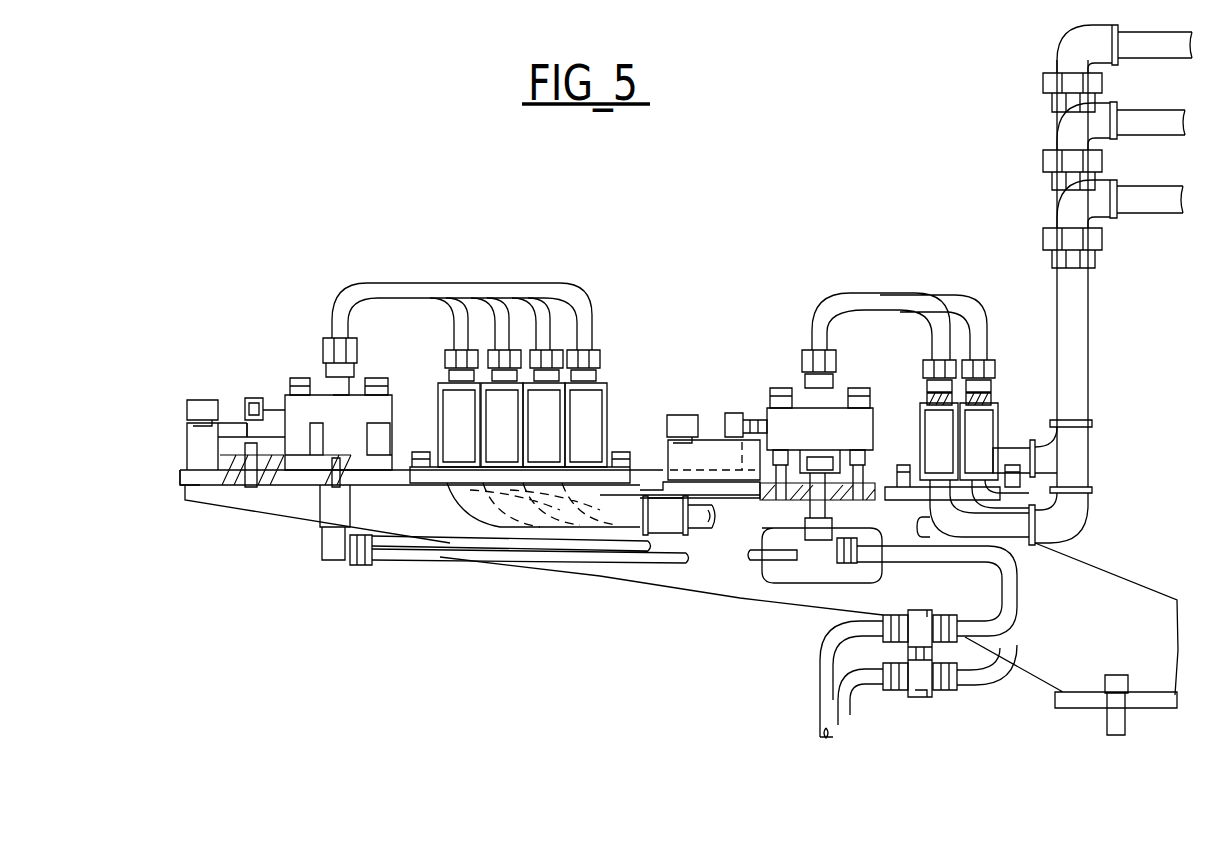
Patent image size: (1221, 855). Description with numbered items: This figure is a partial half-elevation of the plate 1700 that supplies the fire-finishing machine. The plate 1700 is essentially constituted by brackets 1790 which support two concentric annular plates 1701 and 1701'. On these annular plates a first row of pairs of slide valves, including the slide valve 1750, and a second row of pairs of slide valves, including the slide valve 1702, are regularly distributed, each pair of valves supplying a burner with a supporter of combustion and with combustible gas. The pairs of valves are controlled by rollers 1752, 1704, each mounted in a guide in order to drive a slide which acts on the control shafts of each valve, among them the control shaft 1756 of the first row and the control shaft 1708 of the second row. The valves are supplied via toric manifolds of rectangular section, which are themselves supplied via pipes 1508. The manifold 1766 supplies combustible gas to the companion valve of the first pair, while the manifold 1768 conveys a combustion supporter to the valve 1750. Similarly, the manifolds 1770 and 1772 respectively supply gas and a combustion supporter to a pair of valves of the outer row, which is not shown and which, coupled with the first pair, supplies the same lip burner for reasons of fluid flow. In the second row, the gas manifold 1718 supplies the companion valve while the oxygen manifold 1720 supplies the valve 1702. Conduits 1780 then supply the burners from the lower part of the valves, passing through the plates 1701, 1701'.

The plate 1700 is at (150, 471).
The annular plate 1701 is at (491, 529).
The annular plate 1701' is at (680, 556).
The slide valve 1702 is at (807, 410).
The roller 1704 is at (657, 417).
The control shaft 1708 is at (750, 417).
The gas manifold 1718 is at (913, 403).
The oxygen manifold 1720 is at (1002, 398).
The pipe 1508 is at (1057, 293).
The slide valve 1750 is at (320, 388).
The roller 1752 is at (190, 406).
The control shaft 1756 is at (265, 399).
The manifold 1766 is at (443, 390).
The manifold 1768 is at (480, 390).
The manifold 1770 is at (560, 388).
The manifold 1772 is at (603, 397).
The conduit 1780 is at (806, 727).
The bracket 1790 is at (675, 577).